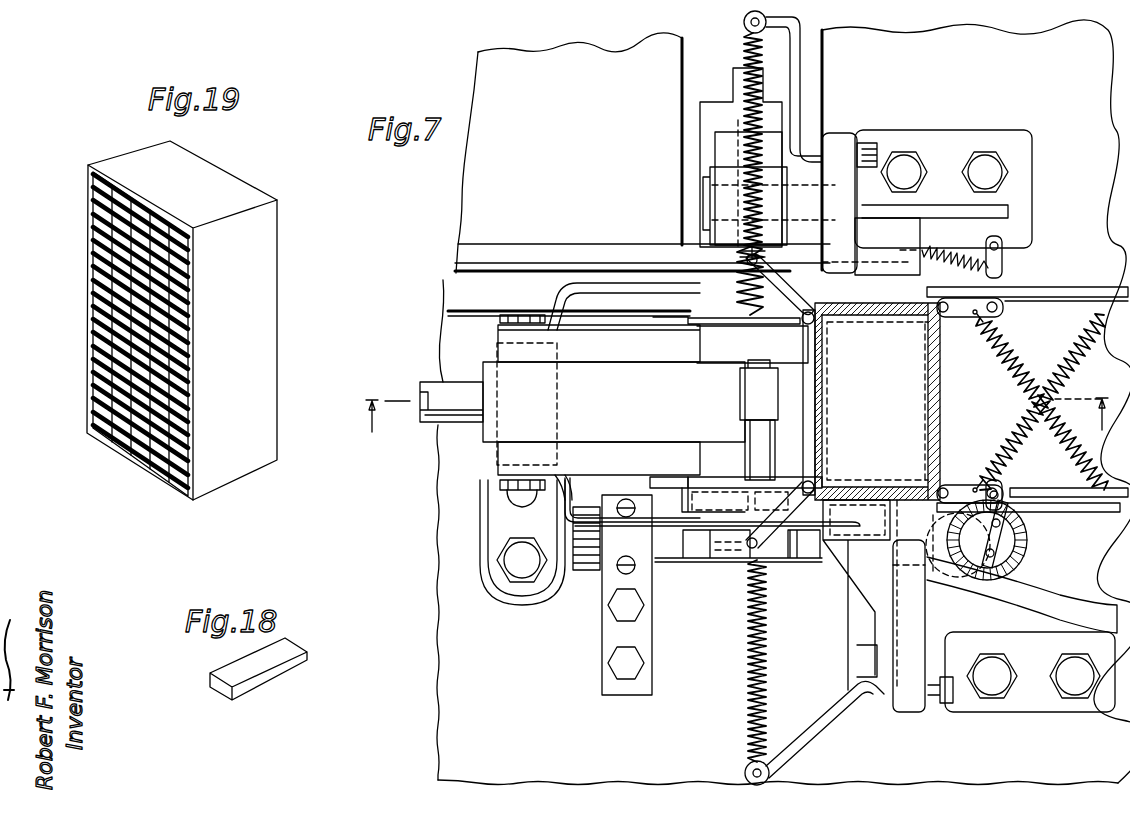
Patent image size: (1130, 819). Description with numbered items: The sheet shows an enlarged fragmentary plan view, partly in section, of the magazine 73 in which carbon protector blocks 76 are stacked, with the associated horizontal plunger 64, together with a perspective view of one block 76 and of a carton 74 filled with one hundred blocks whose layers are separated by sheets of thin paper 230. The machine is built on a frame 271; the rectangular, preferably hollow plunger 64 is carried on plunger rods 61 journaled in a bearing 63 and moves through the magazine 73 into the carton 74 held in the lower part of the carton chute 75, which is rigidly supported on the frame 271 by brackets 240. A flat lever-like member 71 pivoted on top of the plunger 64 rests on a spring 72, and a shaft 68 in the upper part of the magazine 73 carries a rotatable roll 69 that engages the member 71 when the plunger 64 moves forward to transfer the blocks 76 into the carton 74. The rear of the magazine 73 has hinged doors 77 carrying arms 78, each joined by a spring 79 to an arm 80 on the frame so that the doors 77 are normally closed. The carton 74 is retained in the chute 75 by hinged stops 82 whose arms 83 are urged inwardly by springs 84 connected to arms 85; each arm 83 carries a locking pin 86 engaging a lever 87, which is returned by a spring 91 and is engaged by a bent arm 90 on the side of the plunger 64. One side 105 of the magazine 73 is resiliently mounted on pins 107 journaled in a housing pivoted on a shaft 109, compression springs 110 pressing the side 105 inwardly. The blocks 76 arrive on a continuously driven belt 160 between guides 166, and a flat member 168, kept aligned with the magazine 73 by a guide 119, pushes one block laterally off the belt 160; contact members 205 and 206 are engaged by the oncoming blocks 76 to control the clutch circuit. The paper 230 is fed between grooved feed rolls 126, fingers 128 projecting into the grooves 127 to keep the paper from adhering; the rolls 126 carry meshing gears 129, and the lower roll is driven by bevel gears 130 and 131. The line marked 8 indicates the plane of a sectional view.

In FIG. 7, the section line 8 is at (731, 421).
In FIG. 7, the plunger rods 61 is at (437, 392).
In FIG. 7, the bearing 63 is at (497, 460).
In FIG. 7, the plunger 64 is at (490, 353).
In FIG. 7, the shaft 68 is at (760, 436).
In FIG. 7, the rotatable roll 69 is at (1100, 392).
In FIG. 7, the flat lever like member 71 is at (517, 385).
In FIG. 7, the spring 72 is at (565, 445).
In FIG. 7, the magazine 73 is at (725, 472).
In FIG. 19, the carton 74 is at (257, 314).
In FIG. 7, the carton 74 is at (876, 401).
In FIG. 7, the carton chute 75 is at (913, 393).
In FIG. 19, the carbon protector block 76 is at (95, 226).
In FIG. 18, the carbon protector block 76 is at (277, 660).
In FIG. 7, the hinged doors 77 is at (826, 384).
In FIG. 7, the arm 78 is at (772, 588).
In FIG. 7, the spring 79 is at (790, 662).
In FIG. 7, the arm 80 is at (812, 785).
In FIG. 7, the hinged stops 82 is at (926, 482).
In FIG. 7, the arm 83 is at (963, 485).
In FIG. 7, the spring 84 is at (1046, 360).
In FIG. 7, the arm 85 is at (1100, 512).
In FIG. 7, the locking pin 86 is at (992, 486).
In FIG. 7, the lever 87 is at (1000, 510).
In FIG. 7, the bent arm 90 is at (700, 548).
In FIG. 7, the spring 91 is at (948, 200).
In FIG. 7, the side of the magazine 105 is at (742, 324).
In FIG. 7, the pins 107 is at (738, 130).
In FIG. 7, the shaft 109 is at (712, 196).
In FIG. 7, the compression spring 110 is at (735, 299).
In FIG. 7, the guide 119 is at (702, 257).
In FIG. 7, the grooved feed rolls 126 is at (732, 578).
In FIG. 7, the groove 127 is at (790, 572).
In FIG. 7, the finger 128 is at (686, 490).
In FIG. 7, the gear 129 is at (577, 572).
In FIG. 7, the bevel gear 130 is at (958, 582).
In FIG. 7, the bevel gear 131 is at (1012, 562).
In FIG. 7, the belt 160 is at (450, 272).
In FIG. 7, the guides 166 is at (450, 300).
In FIG. 7, the flat member 168 is at (712, 141).
In FIG. 7, the contact member 205 is at (818, 270).
In FIG. 7, the contact member 206 is at (815, 258).
In FIG. 19, the paper 230 is at (96, 361).
In FIG. 7, the brackets 240 is at (920, 742).
In FIG. 7, the frame 271 is at (783, 402).